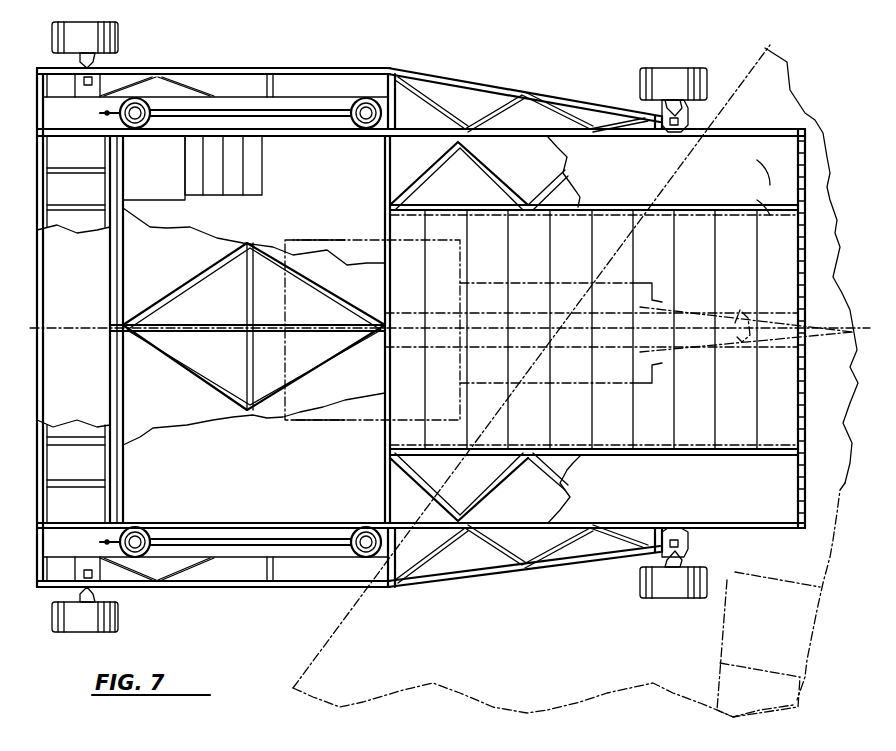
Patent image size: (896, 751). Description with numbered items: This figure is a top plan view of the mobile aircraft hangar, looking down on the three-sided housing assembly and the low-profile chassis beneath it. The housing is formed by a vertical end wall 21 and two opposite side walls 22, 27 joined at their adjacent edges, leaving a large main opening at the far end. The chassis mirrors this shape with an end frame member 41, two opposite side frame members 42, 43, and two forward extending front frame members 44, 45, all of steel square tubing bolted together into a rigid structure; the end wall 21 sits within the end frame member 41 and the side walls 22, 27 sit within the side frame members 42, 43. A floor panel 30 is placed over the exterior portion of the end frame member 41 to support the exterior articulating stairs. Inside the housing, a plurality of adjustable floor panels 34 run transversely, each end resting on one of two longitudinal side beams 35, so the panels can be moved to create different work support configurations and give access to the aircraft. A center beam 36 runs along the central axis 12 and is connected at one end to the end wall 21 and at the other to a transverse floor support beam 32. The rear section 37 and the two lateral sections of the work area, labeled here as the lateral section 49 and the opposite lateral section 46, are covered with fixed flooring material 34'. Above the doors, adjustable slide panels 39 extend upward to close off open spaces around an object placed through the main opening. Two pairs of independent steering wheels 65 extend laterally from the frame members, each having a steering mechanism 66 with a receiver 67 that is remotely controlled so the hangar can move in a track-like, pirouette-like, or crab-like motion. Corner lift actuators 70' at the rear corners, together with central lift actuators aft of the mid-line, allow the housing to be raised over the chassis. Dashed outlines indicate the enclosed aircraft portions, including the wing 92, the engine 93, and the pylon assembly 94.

The central axis 12 is at (775, 330).
The end wall 21 is at (118, 375).
The side wall 22 is at (270, 522).
The side wall 27 is at (252, 128).
The floor panel 30 is at (90, 288).
The transverse floor support beam 32 is at (380, 378).
The adjustable floor panel 34 is at (731, 327).
The fixed flooring material 34' is at (351, 330).
The side beam 35 is at (485, 208).
The center beam 36 is at (172, 325).
The rear section 37 is at (265, 227).
The slide panel 39 is at (800, 203).
The end frame member 41 is at (38, 155).
The side frame member 42 is at (358, 590).
The side frame member 43 is at (287, 70).
The front frame member 44 is at (535, 570).
The front frame member 45 is at (525, 92).
The lower deck section 46 is at (654, 498).
The lateral section 49 is at (632, 190).
The steering wheel 65 is at (86, 34).
The steering mechanism 66 is at (96, 60).
The receiver 67 is at (87, 86).
The corner lift actuator 70' is at (168, 335).
The wing 92 is at (798, 115).
The engine 93 is at (355, 245).
The pylon assembly 94 is at (445, 325).